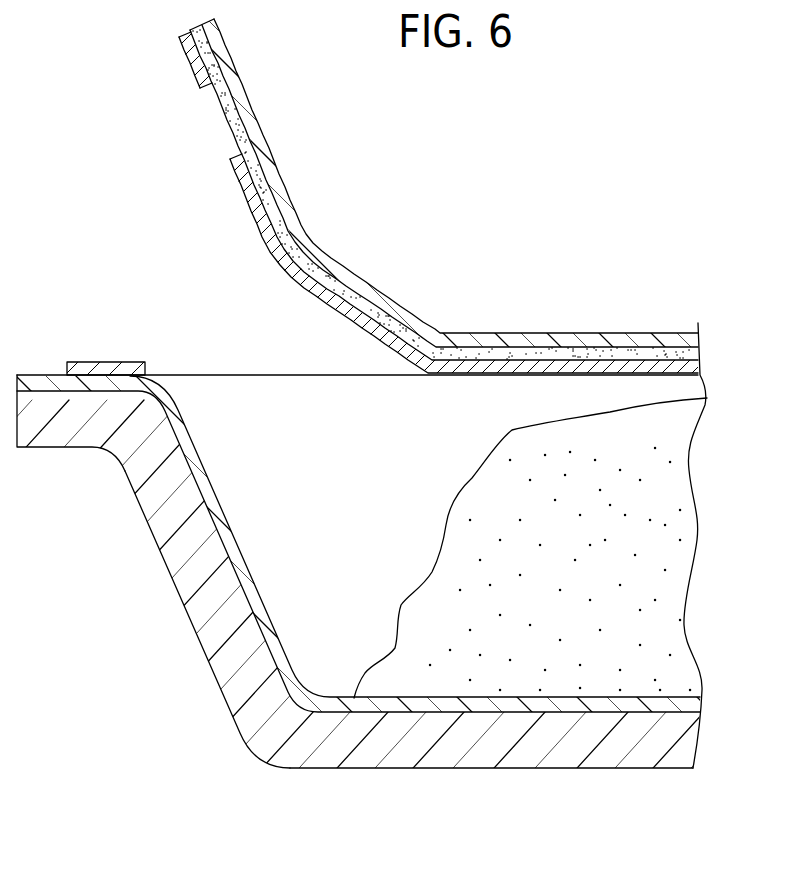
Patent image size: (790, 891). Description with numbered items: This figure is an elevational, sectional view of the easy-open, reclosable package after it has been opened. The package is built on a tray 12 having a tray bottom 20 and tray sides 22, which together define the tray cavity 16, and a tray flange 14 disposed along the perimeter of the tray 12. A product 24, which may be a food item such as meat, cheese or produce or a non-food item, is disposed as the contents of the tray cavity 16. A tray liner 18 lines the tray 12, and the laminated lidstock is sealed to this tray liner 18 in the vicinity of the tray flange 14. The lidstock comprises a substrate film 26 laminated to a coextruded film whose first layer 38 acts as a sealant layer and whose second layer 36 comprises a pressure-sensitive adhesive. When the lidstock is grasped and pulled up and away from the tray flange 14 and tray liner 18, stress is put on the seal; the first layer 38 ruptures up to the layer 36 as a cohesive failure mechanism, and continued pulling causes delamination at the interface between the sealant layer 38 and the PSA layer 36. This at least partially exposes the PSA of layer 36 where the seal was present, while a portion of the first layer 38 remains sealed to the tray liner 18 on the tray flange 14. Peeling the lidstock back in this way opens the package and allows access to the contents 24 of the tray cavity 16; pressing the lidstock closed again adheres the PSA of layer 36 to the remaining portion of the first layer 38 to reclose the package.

The tray 12 is at (560, 775).
The tray flange 14 is at (77, 468).
The tray cavity 16 is at (360, 478).
The tray liner 18 is at (223, 505).
The tray bottom 20 is at (442, 768).
The tray sides 22 is at (178, 593).
The product 24 is at (450, 555).
The substrate film 26 is at (373, 290).
The second layer 36 is at (240, 117).
The first layer 38 is at (182, 62).